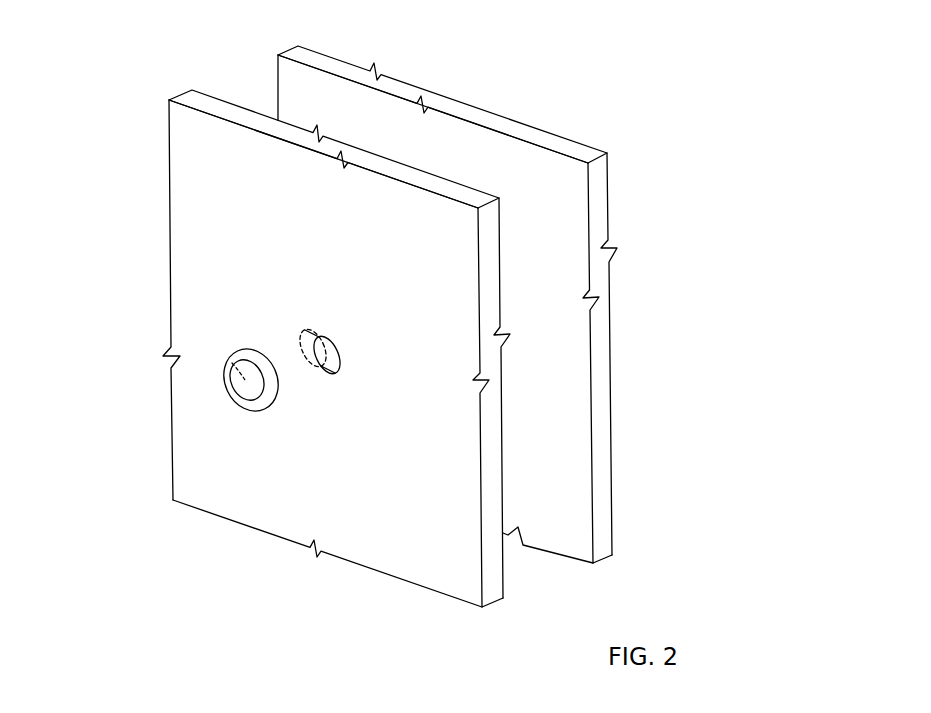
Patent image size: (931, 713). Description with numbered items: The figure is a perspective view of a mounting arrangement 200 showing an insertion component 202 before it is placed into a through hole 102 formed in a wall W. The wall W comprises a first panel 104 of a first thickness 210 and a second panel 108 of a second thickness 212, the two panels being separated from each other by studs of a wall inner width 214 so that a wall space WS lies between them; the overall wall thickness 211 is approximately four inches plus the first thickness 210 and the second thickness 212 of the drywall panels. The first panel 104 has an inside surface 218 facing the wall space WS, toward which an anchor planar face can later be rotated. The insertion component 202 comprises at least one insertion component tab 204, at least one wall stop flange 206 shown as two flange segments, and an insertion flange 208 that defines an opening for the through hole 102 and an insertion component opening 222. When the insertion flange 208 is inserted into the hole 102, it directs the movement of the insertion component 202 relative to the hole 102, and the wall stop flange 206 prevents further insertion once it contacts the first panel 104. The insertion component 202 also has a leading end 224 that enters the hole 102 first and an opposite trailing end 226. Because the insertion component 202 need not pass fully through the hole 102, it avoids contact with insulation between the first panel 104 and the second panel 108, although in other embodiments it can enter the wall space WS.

The workpiece assembly 200 is at (710, 90).
The wall space WS is at (194, 57).
The wall W is at (668, 168).
The first panel 104 is at (408, 521).
The second panel 108 is at (565, 367).
The through hole 102 is at (335, 337).
The insertion component 202 is at (205, 375).
The insertion component tab 204 is at (222, 378).
The wall stop flange 206 is at (238, 350).
The insertion flange 208 is at (273, 357).
The first thickness 210 is at (530, 454).
The wall thickness 211 is at (645, 443).
The second thickness 212 is at (558, 443).
The wall inner width 214 is at (620, 187).
The first panel inside surface 218 is at (306, 118).
The insertion component opening 222 is at (240, 386).
The leading end 224 is at (295, 370).
The trailing end 226 is at (225, 415).